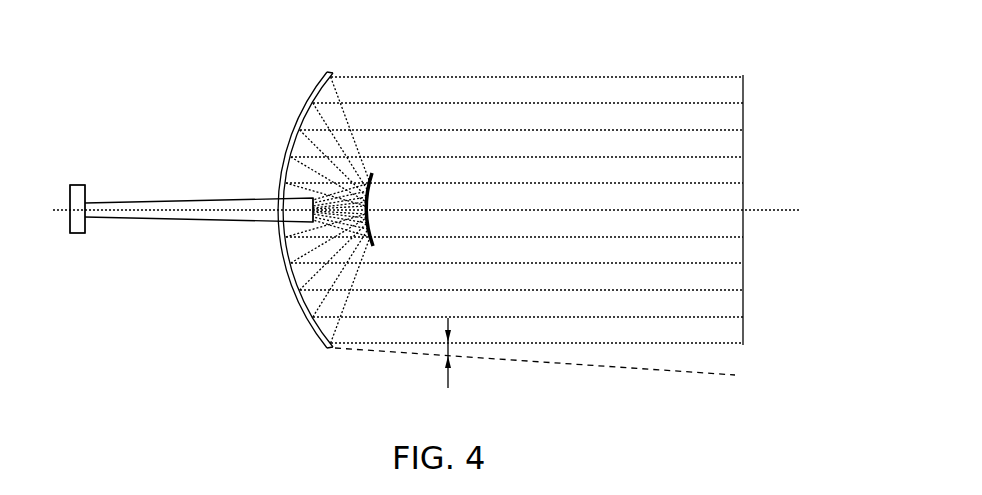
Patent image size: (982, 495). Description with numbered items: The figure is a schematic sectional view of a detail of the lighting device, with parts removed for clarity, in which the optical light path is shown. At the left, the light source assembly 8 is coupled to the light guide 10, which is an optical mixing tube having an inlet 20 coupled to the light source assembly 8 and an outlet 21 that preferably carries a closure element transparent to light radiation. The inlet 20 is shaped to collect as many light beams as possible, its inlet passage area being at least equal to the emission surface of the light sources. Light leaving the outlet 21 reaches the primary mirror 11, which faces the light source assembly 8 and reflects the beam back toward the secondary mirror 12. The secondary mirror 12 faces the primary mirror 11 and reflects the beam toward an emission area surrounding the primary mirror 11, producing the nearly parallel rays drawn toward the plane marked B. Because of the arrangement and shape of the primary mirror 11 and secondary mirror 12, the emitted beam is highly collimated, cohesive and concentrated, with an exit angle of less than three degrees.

The light source assembly 8 is at (80, 175).
The light guide 10 is at (195, 218).
The primary mirror 11 is at (372, 187).
The secondary mirror 12 is at (304, 104).
The inlet 20 is at (93, 228).
The outlet 21 is at (324, 223).
The reference plane B is at (775, 210).